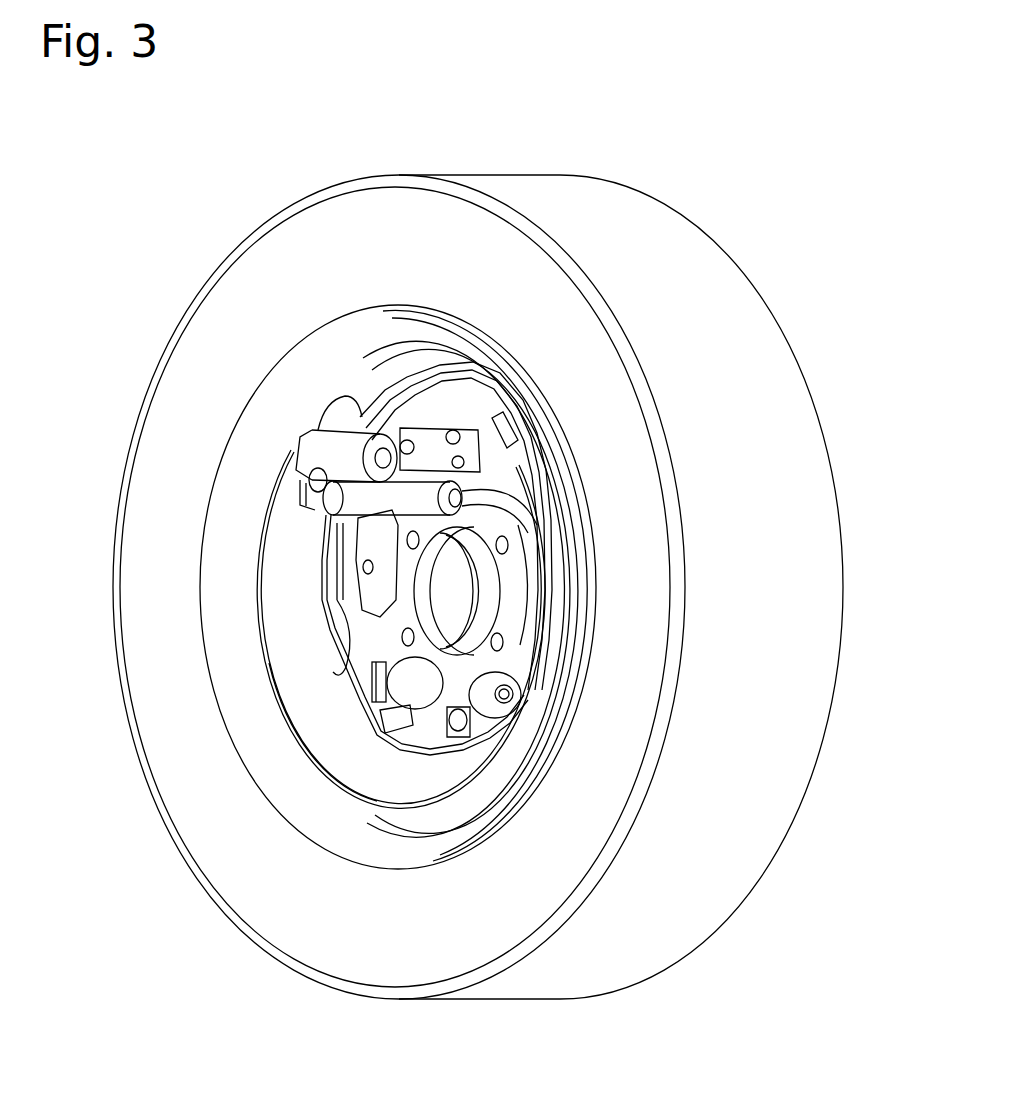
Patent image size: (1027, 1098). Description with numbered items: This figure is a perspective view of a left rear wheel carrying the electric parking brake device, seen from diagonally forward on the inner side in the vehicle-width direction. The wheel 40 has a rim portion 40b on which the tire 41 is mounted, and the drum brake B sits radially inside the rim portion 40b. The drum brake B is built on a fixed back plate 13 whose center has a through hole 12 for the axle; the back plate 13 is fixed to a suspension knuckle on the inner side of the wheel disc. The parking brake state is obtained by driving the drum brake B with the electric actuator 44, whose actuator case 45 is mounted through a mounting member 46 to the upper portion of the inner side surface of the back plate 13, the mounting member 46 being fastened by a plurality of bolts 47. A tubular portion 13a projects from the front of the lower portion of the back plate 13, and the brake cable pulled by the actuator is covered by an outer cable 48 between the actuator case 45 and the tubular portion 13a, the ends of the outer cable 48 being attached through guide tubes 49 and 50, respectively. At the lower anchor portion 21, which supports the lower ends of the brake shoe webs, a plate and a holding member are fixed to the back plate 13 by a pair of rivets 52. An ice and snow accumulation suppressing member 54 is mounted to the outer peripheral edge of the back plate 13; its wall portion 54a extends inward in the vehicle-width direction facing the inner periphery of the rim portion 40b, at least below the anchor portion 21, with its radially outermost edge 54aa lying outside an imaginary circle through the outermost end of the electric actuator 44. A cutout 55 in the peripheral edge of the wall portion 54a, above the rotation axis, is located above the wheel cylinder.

The tire 41 is at (646, 222).
The wheel 40 is at (380, 300).
The rim portion 40b is at (430, 337).
The ice and snow accumulation suppressing member 54 is at (251, 592).
The wall portion 54a is at (285, 640).
The outermost edge 54aa is at (303, 752).
The cutout 55 is at (480, 403).
The outer cable 48 is at (540, 553).
The tubular portion 13a is at (500, 727).
The back plate 13 is at (360, 663).
The through hole 12 is at (498, 598).
The guide tube 49 is at (403, 633).
The actuator case 45 is at (362, 443).
The electric actuator 44 is at (330, 533).
The mounting member 46 is at (470, 487).
The bolts 47 is at (513, 437).
The anchor portion 21 is at (443, 740).
The guide tube 50 is at (521, 683).
The rivets 52 is at (476, 695).
The drum brake B is at (367, 737).